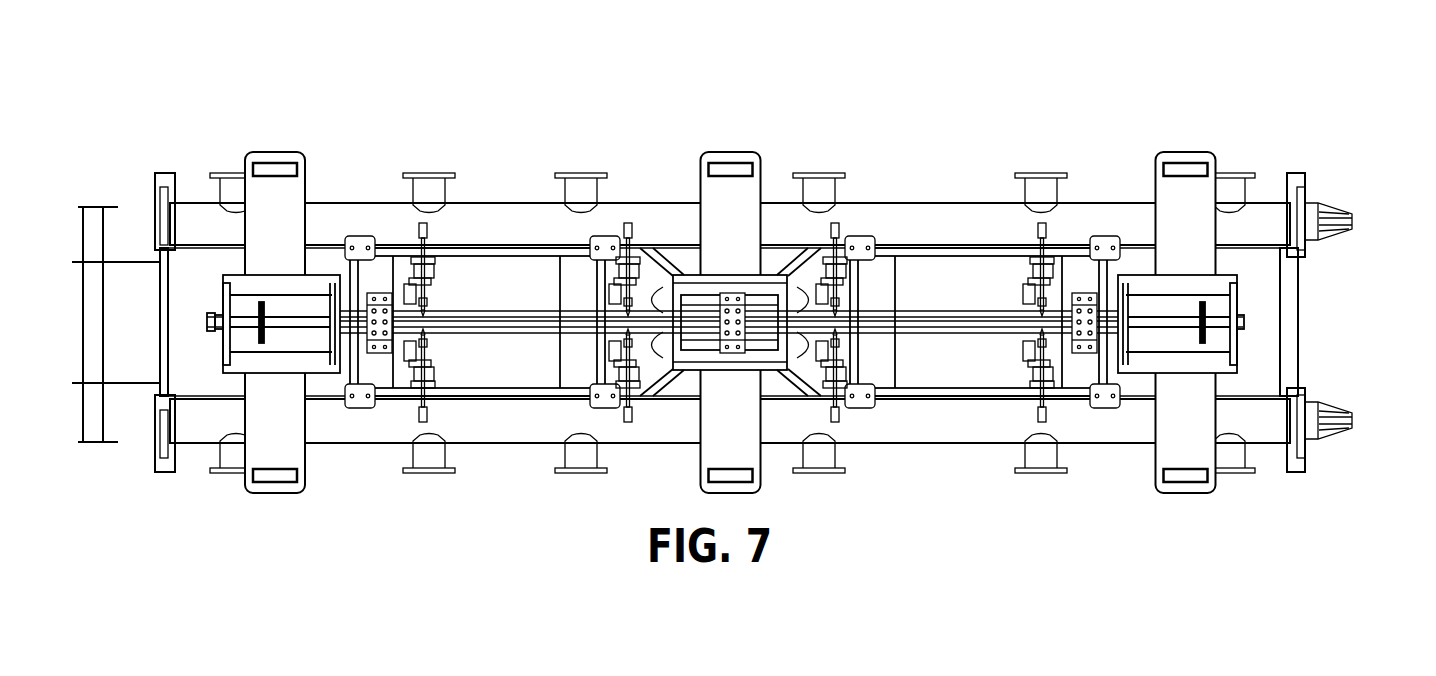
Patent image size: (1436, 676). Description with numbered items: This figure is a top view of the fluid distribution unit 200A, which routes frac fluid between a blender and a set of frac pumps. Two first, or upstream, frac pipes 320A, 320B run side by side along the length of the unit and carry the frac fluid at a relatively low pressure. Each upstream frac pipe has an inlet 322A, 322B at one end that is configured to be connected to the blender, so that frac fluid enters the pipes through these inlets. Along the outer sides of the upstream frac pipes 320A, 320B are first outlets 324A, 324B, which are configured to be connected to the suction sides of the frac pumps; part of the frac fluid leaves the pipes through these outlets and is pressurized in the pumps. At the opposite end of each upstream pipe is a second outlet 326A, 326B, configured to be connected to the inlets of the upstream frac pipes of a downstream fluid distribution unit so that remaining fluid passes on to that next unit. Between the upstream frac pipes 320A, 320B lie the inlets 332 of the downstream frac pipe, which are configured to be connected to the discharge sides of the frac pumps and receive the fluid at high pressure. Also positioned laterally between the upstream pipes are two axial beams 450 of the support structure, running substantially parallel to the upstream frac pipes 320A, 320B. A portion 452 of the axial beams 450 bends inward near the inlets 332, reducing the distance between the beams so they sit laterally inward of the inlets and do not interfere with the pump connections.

The fluid distribution unit 200A is at (156, 78).
The upstream frac pipe 320A is at (917, 444).
The upstream frac pipe 320B is at (927, 203).
The inlet 322A is at (1358, 420).
The inlet 322B is at (1358, 220).
The first outlet 324A is at (1040, 478).
The first outlet 324B is at (1042, 173).
The second outlet 326A is at (151, 432).
The second outlet 326B is at (151, 210).
The inlet 332 is at (741, 282).
The axial beam 450 is at (473, 248).
The portion 452 is at (697, 292).